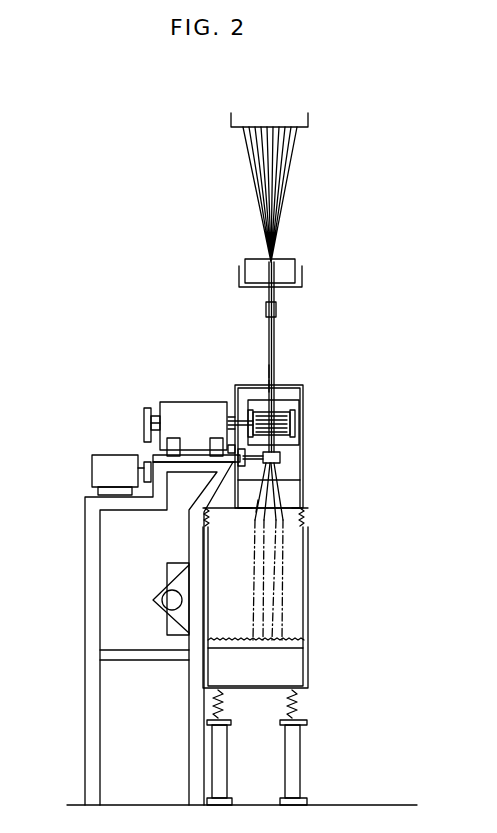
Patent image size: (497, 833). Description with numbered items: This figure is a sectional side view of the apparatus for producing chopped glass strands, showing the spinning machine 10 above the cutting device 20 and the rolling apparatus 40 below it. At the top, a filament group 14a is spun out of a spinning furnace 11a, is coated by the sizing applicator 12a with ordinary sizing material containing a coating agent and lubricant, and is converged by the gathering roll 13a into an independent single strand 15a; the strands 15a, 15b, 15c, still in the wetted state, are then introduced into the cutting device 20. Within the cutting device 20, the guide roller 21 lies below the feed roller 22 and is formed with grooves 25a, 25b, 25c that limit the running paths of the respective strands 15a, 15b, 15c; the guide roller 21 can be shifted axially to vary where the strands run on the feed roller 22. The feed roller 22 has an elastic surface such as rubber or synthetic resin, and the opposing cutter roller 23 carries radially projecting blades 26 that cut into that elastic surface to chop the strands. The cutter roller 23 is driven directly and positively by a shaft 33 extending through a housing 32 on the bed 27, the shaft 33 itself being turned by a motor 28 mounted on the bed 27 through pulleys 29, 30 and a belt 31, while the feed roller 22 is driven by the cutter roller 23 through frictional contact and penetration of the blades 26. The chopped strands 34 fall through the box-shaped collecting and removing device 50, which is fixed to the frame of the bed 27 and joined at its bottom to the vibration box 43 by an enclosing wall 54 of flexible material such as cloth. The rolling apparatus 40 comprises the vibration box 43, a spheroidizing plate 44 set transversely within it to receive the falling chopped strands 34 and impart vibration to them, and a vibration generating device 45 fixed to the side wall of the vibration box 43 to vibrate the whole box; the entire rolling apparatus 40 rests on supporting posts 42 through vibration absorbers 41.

The spinning furnace 11a is at (295, 120).
The filament group 14a is at (290, 175).
The spinning machine 10 is at (318, 235).
The sizing applicator 12a is at (302, 275).
The gathering roll 13a is at (276, 310).
The strand 15a is at (274, 368).
The strand 15b is at (268, 388).
The strand 15c is at (268, 372).
The cutting device 20 is at (312, 385).
The feed roller 22 is at (300, 404).
The cutter roller 23 is at (300, 423).
The blades 26 is at (297, 430).
The guide roller 21 is at (280, 458).
The groove 25a is at (272, 470).
The groove 25b is at (280, 490).
The groove 25c is at (254, 515).
The collecting and removing device 50 is at (312, 505).
The enclosing wall 54 is at (306, 518).
The rolling apparatus 40 is at (310, 620).
The vibration box 43 is at (308, 600).
The spheroidizing plate 44 is at (270, 648).
The chopped strands 34 is at (243, 567).
The vibration absorbers 41 is at (223, 702).
The supporting posts 42 is at (228, 763).
The bed 27 is at (85, 593).
The vibration generating device 45 is at (153, 602).
The motor 28 is at (92, 465).
The pulley 29 is at (132, 458).
The pulley 30 is at (143, 412).
The belt 31 is at (142, 448).
The housing 32 is at (187, 402).
The shaft 33 is at (233, 405).